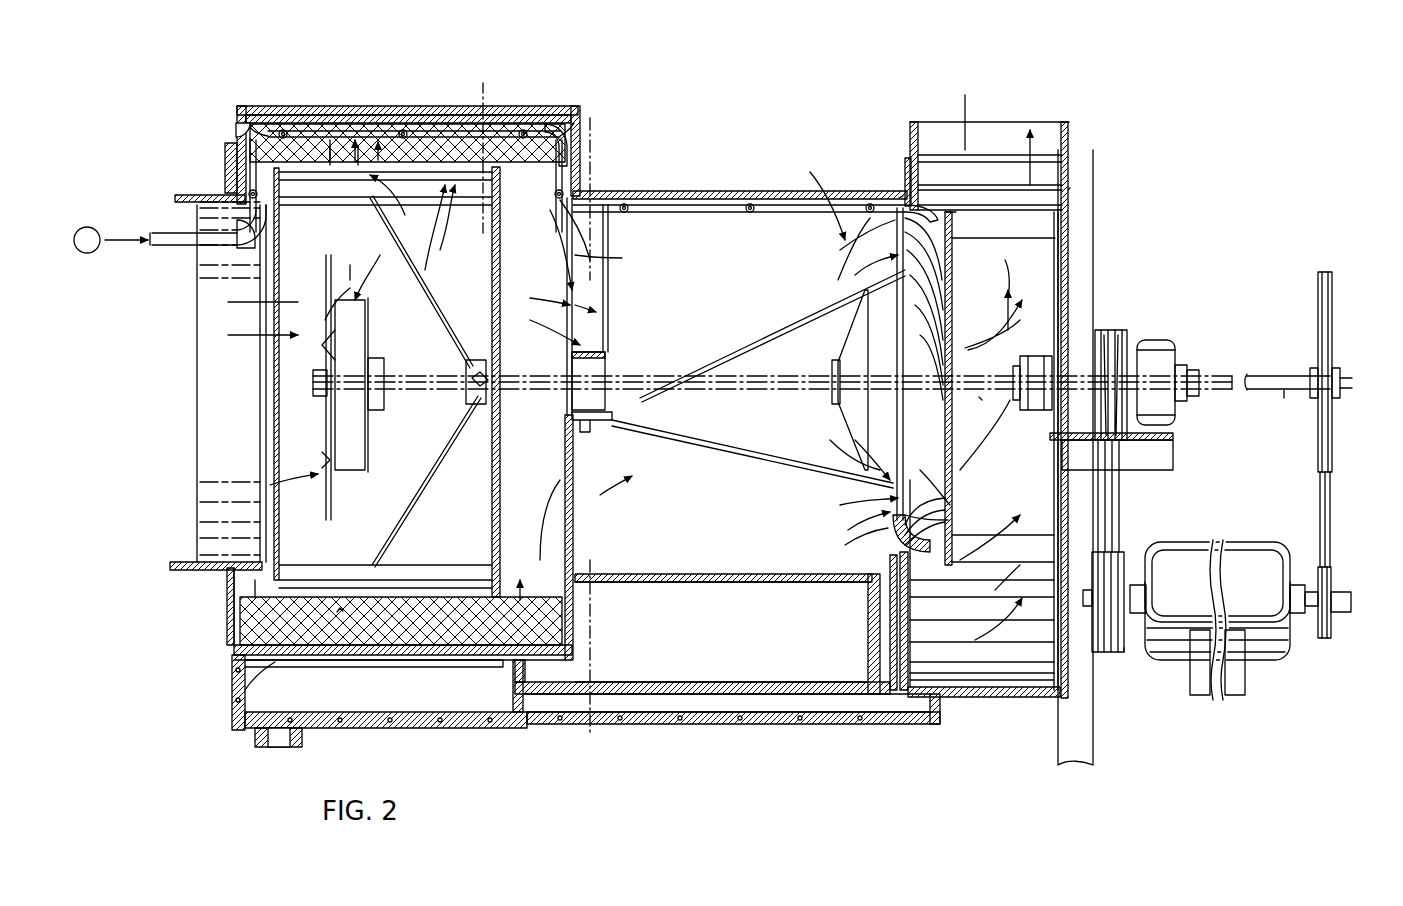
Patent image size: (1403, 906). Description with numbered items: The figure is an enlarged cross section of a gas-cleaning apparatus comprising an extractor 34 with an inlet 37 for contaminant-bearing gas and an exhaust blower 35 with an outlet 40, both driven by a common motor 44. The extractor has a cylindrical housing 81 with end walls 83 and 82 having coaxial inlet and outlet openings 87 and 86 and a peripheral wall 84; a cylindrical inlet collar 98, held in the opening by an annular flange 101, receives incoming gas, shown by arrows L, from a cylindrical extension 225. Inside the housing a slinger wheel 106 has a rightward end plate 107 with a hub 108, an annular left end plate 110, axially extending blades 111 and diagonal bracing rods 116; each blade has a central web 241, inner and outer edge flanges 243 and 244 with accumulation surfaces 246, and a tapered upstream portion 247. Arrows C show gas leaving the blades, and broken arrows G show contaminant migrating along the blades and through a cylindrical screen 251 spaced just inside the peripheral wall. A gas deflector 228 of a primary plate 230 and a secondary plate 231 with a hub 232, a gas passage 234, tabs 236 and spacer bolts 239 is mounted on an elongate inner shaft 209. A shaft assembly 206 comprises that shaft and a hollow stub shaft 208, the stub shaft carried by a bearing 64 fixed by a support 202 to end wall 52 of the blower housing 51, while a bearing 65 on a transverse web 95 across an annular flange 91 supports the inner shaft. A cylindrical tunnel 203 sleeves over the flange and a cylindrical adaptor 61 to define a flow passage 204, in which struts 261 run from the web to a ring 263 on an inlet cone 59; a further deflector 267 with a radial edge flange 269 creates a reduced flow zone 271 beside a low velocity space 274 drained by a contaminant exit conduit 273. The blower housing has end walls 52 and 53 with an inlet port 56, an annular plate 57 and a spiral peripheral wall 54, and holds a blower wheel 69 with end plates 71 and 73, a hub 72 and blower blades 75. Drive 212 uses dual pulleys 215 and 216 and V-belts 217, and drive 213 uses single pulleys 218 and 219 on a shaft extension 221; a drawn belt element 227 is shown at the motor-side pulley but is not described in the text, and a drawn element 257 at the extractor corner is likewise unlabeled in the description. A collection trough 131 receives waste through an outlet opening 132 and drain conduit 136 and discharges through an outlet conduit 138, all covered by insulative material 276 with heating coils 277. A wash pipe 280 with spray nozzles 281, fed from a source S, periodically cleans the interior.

The extractor 34 is at (380, 72).
The exhaust blower 35 is at (1074, 188).
The inlet 37 is at (185, 546).
The outlet 40 is at (988, 132).
The motor 44 is at (1270, 632).
The housing 51 is at (1077, 232).
The end wall 52 is at (1068, 264).
The end wall 53 is at (908, 646).
The spiral-shaped peripheral wall 54 is at (1025, 698).
The inlet port 56 is at (908, 566).
The annular plate 57 is at (910, 185).
The inlet cone 59 is at (925, 352).
The cylindrical adaptor 61 is at (903, 196).
The bearing 64 is at (1165, 355).
The bearing 65 is at (606, 378).
The centrifugal blower wheel 69 is at (995, 602).
The rightward end plate 71 is at (1058, 306).
The hub 72 is at (1026, 410).
The annular left end plate 73 is at (953, 238).
The blower blades 75 is at (1000, 271).
The housing 81 is at (400, 108).
The end wall 82 is at (574, 622).
The end wall 83 is at (232, 636).
The peripheral wall 84 is at (566, 108).
The outlet opening 86 is at (572, 572).
The inlet opening 87 is at (232, 606).
The annular flange 91 is at (603, 290).
The transverse web 95 is at (612, 416).
The inlet collar 98 is at (212, 566).
The annular flange 101 is at (226, 605).
The slinger wheel 106 is at (498, 596).
The rightward end plate 107 is at (500, 258).
The hub 108 is at (478, 368).
The annular left end plate 110 is at (285, 588).
The blades 111 is at (340, 608).
The diagonal bracing rods 116 is at (416, 486).
The collection trough 131 is at (384, 718).
The waste outlet opening 132 is at (410, 668).
The conduit 136 is at (742, 724).
The outlet conduit 138 is at (258, 734).
The support 202 is at (1170, 454).
The tunnel 203 is at (670, 190).
The flow passage 204 is at (720, 548).
The shaft assembly 206 is at (1203, 372).
The hollow stub shaft 208 is at (1058, 356).
The elongate inner shaft 209 is at (982, 400).
The drive 212 is at (1130, 548).
The drive 213 is at (1340, 528).
The dual pulley 215 is at (1120, 340).
The dual pulley 216 is at (1124, 652).
The V-belts 217 is at (1122, 508).
The single pulley 218 is at (1336, 475).
The single pulley 219 is at (1334, 632).
The rightward extension 221 is at (1284, 398).
The cylindrical extension 225 is at (196, 196).
The belt 227 is at (1320, 548).
The gas deflector 228 is at (272, 484).
The primary plate 230 is at (330, 290).
The secondary plate 231 is at (370, 318).
The hub 232 is at (374, 406).
The gas passage 234 is at (326, 404).
The tabs 236 is at (324, 460).
The spacer bolts 239 is at (350, 308).
The central web 241 is at (471, 221).
The inner longitudinal edge flange 243 is at (450, 233).
The outer longitudinal edge flange 244 is at (433, 150).
The contaminant material accumulation surfaces 246 is at (398, 216).
The tapered portion 247 is at (344, 568).
The cylindrical screen 251 is at (405, 130).
The corner seal 257 is at (258, 107).
The struts 261 is at (756, 452).
The ring 263 is at (898, 548).
The deflector 267 is at (846, 310).
The radial edge flange 269 is at (842, 505).
The reduced flow cross section zone 271 is at (810, 172).
The contaminant exit conduit 273 is at (870, 640).
The low gas velocity space 274 is at (868, 580).
The insulative material 276 is at (528, 718).
The electrical heating coils 277 is at (472, 726).
The wash pipe 280 is at (490, 150).
The spray nozzles 281 is at (272, 120).
The broken line arrows G is at (344, 160).
The solid line arrows L is at (228, 302).
The source S is at (111, 240).
The solid line arrows C is at (532, 298).